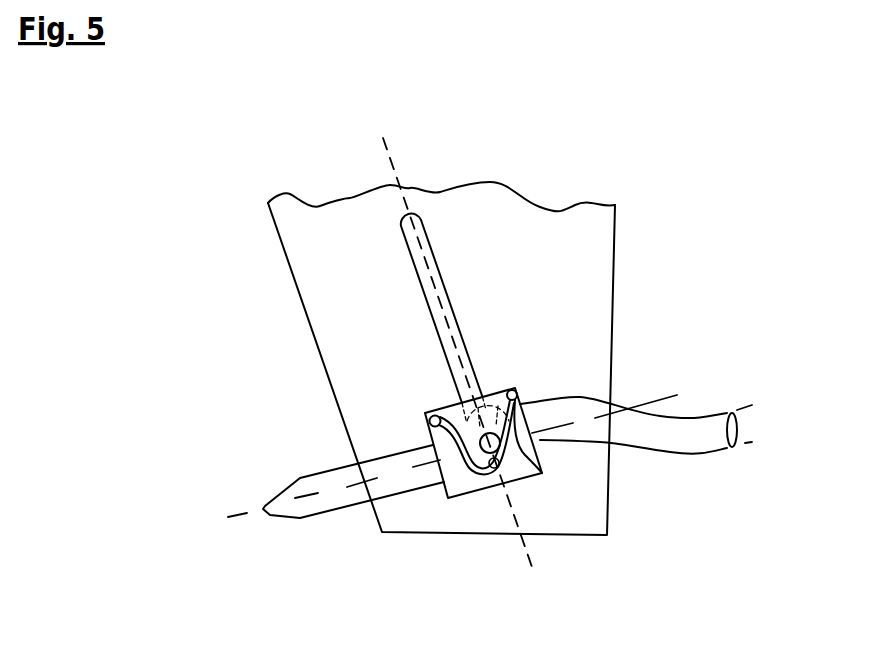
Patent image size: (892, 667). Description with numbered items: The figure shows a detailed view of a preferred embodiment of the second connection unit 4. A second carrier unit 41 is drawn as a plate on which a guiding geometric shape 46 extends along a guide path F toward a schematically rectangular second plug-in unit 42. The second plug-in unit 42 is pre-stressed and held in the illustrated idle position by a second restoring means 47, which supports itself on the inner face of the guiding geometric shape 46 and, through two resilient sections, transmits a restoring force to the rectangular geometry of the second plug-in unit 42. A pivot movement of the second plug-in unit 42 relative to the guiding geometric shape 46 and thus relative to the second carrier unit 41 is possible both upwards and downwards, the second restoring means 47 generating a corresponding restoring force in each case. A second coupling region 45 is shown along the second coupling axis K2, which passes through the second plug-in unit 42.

The second connection unit 4 is at (619, 152).
The second carrier unit 41 is at (608, 270).
The second plug-in unit 42 is at (432, 501).
The second coupling region 45 is at (327, 472).
The guiding geometric shape 46 is at (428, 250).
The second restoring means 47 is at (543, 474).
The guide path F is at (398, 167).
The second coupling axis K2 is at (317, 493).